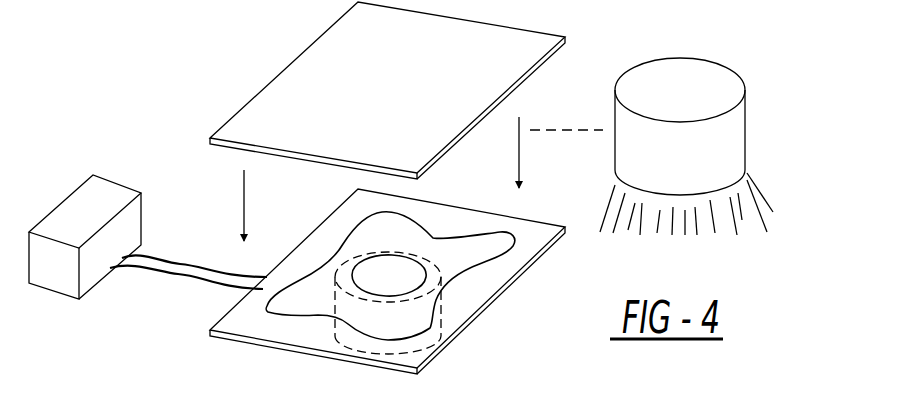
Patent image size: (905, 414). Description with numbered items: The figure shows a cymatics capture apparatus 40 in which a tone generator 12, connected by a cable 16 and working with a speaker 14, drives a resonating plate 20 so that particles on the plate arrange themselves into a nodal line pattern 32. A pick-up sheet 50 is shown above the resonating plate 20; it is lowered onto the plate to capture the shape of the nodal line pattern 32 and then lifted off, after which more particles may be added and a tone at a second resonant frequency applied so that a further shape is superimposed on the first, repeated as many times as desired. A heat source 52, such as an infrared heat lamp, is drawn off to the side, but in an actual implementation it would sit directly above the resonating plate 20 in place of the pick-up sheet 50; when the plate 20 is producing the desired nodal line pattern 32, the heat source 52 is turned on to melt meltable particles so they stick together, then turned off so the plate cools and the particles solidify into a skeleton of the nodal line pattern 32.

The apparatus 40 is at (124, 128).
The tone generator 12 is at (58, 205).
The cable 16 is at (182, 280).
The pick-up sheet 50 is at (311, 45).
The heat source 52 is at (745, 111).
The resonating plate 20 is at (468, 325).
The speaker 14 is at (315, 336).
The nodal line pattern 32 is at (497, 262).